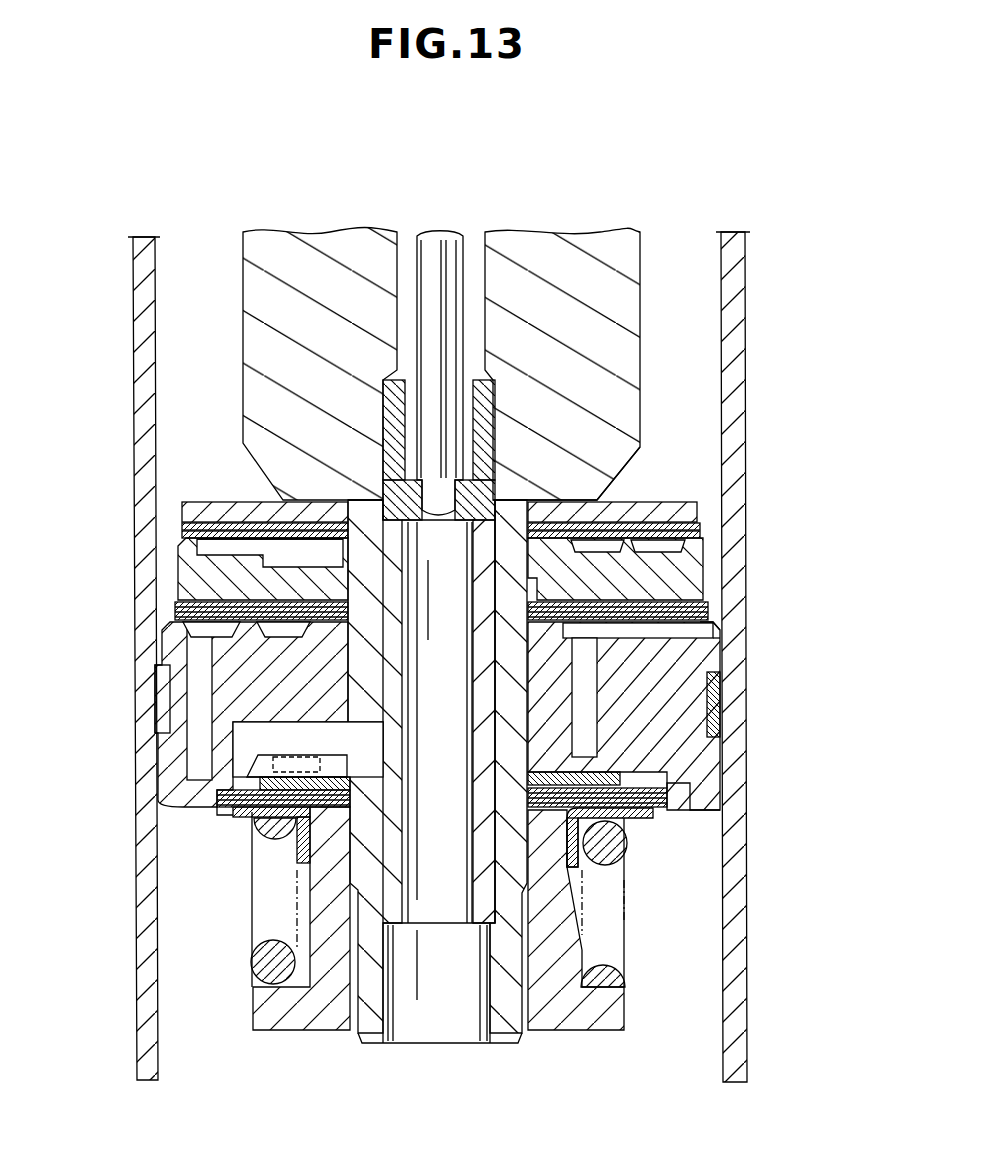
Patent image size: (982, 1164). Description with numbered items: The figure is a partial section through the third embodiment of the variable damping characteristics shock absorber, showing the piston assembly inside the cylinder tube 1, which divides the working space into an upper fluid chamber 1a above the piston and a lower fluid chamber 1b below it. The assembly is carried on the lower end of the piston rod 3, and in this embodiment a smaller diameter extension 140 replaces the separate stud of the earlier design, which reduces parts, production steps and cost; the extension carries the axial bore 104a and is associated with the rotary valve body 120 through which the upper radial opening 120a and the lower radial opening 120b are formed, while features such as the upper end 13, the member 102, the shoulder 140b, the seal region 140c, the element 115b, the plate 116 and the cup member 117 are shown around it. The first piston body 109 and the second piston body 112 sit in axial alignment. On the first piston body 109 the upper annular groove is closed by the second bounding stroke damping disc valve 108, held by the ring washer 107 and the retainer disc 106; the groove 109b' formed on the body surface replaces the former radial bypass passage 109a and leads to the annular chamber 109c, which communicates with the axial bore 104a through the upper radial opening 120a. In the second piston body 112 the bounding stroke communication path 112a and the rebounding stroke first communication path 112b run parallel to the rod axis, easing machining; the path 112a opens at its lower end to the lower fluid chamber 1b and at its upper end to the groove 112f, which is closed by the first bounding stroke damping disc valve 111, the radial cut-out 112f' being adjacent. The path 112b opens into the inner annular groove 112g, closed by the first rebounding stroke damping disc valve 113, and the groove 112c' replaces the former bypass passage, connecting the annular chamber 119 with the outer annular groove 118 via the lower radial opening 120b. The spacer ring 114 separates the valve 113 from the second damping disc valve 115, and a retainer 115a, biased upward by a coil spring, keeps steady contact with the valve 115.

The cylinder tube 1 is at (752, 262).
The upper fluid chamber 1a is at (207, 308).
The lower fluid chamber 1b is at (209, 1041).
The piston rod 3 is at (646, 334).
The piston rod 13 is at (463, 237).
The valve seat member 102 is at (710, 626).
The axial bore 104a is at (390, 995).
The retainer disc 106 is at (682, 502).
The ring washer 107 is at (567, 500).
The second bounding stroke damping disc valve 108 is at (700, 524).
The first piston body 109 is at (705, 545).
The bounding stroke bypass passage 109a is at (290, 570).
The groove 109b' is at (195, 525).
The annular chamber 109c is at (293, 563).
The first bounding stroke damping disc valve 111 is at (710, 607).
The second piston body 112 is at (700, 762).
The bounding stroke communication path 112a is at (193, 703).
The rebounding stroke first communication path 112b is at (590, 690).
The groove 112c' is at (215, 749).
The groove 112f is at (181, 641).
The port 112f' is at (787, 633).
The inner annular groove 112g is at (635, 722).
The first rebounding stroke damping disc valve 113 is at (715, 733).
The spacer ring 114 is at (527, 787).
The second damping disc valve 115 is at (680, 815).
The retainer 115a is at (648, 822).
The O-ring 115b is at (620, 852).
The disc valve 116 is at (527, 803).
The cup member 117 is at (585, 1003).
The outer annular groove 118 is at (247, 772).
The annular chamber 119 is at (347, 736).
The rotary valve body 120 is at (483, 480).
The upper radial opening 120a is at (300, 463).
The lower radial opening 120b is at (300, 860).
The smaller diameter extension 140 is at (503, 1013).
The shoulder 140b is at (283, 500).
The seal ring 140c is at (257, 812).